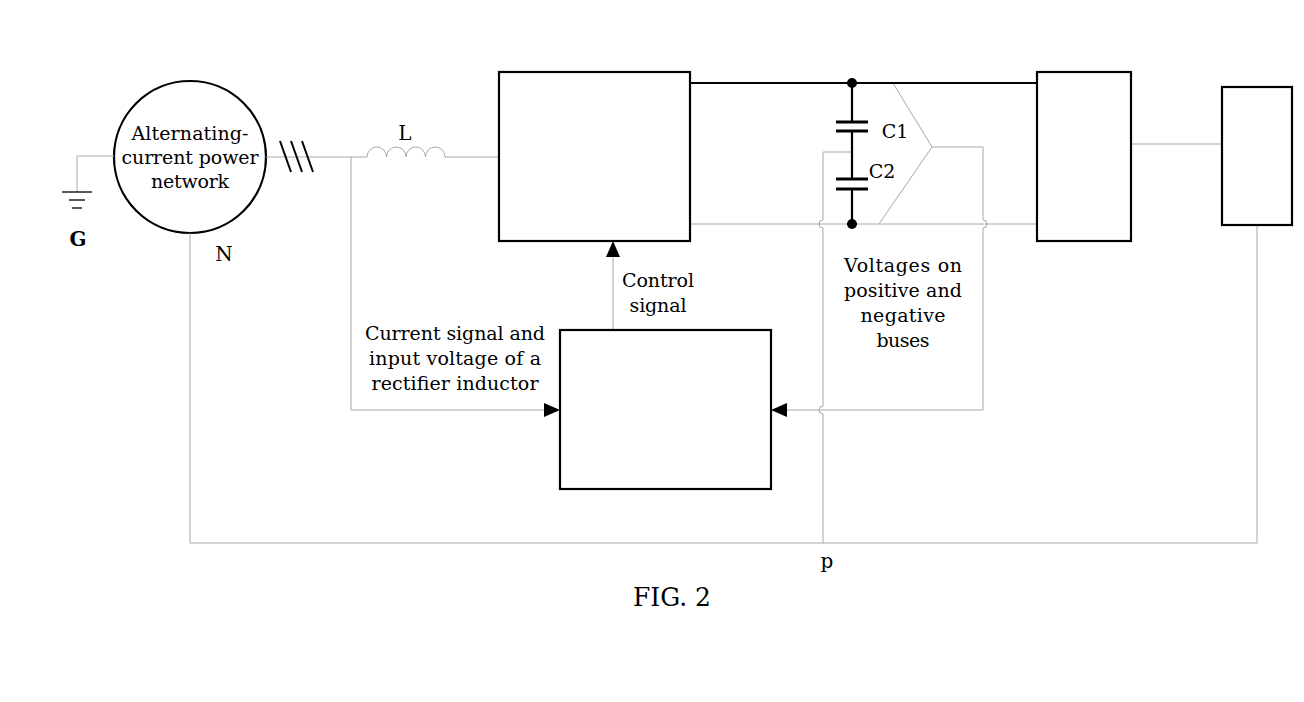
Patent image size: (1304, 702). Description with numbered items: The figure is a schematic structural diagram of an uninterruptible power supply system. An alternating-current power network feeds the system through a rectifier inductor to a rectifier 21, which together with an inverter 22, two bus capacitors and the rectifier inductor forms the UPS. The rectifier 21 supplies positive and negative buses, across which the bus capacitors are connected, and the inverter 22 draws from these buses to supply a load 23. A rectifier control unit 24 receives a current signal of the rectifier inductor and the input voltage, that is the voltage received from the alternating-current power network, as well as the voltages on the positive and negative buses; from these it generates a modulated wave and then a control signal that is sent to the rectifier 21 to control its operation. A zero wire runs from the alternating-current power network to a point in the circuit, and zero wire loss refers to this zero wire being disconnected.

The rectifier 21 is at (578, 72).
The inverter 22 is at (1080, 72).
The load 23 is at (1248, 87).
The rectifier control unit 24 is at (560, 468).